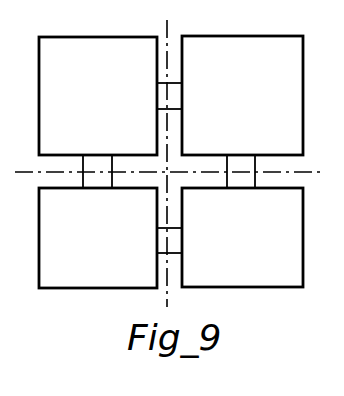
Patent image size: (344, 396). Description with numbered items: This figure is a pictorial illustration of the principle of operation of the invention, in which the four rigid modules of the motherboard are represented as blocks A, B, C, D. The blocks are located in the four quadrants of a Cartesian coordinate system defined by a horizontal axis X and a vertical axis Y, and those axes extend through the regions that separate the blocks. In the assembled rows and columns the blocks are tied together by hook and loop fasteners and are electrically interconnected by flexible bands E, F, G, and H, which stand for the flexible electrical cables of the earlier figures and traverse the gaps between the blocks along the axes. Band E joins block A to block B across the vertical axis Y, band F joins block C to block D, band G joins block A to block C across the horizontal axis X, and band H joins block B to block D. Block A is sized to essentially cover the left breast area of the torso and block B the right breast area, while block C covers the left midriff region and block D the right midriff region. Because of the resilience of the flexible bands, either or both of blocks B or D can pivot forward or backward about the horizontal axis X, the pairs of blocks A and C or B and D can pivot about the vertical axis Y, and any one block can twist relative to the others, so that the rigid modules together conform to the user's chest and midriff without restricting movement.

The block A is at (103, 100).
The block B is at (249, 98).
The block C is at (104, 251).
The block D is at (251, 248).
The flexible band E is at (161, 91).
The flexible band F is at (160, 241).
The flexible band G is at (97, 164).
The flexible band H is at (237, 162).
The horizontal axis X is at (178, 172).
The vertical axis Y is at (166, 153).